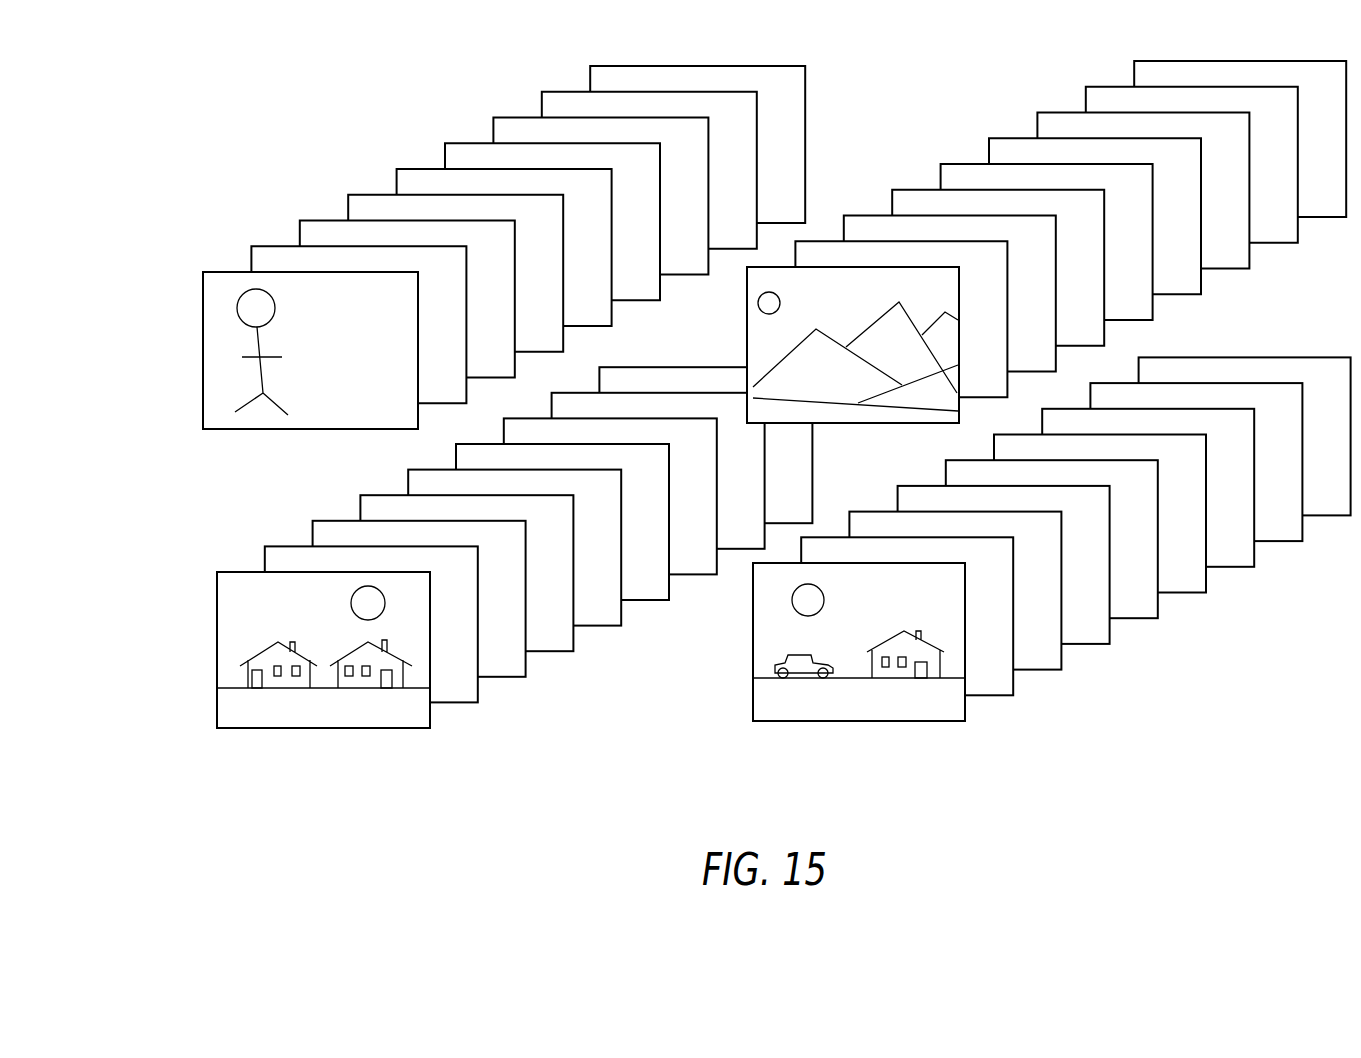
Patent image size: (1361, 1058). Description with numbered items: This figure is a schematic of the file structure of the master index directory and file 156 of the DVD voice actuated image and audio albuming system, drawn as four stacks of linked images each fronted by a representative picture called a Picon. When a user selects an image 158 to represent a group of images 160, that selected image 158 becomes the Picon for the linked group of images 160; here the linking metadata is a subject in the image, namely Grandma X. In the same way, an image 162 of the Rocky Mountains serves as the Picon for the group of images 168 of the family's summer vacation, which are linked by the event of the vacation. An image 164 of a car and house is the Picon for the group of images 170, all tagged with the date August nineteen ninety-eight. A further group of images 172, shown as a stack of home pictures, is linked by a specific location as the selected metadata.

The master index directory and file 156 is at (777, 472).
The selected image (Picon) 158 is at (317, 420).
The group of images 160 is at (504, 430).
The Rocky Mountains image (Picon) 162 is at (868, 415).
The car and house image (Picon) 164 is at (897, 713).
The group of images (family summer vacation) 168 is at (1046, 275).
The group of images (specific date) 170 is at (1052, 574).
The group of images (specific location) 172 is at (602, 643).